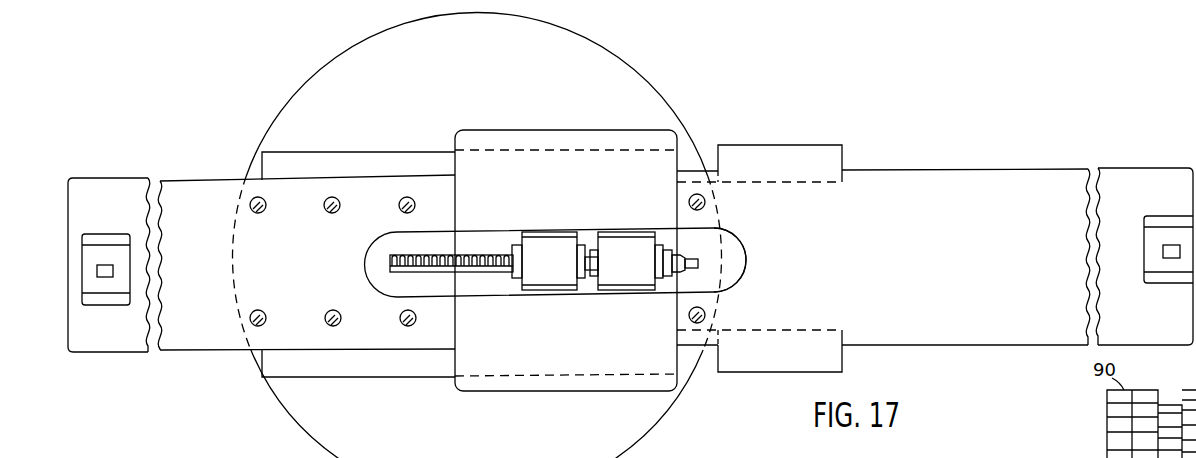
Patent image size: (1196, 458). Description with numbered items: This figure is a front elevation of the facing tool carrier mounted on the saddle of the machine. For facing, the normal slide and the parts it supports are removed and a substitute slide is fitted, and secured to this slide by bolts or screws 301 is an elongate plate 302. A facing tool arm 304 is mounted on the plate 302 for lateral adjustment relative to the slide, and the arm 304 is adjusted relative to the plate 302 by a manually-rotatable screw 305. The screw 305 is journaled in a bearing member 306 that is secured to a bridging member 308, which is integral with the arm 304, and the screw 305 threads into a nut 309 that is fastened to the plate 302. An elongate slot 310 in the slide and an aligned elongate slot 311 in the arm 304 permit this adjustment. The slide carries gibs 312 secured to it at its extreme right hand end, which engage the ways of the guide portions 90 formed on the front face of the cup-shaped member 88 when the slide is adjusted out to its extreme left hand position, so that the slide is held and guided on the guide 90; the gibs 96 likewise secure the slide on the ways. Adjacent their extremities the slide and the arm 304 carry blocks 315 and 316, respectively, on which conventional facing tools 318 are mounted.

The cup-shaped member 88 is at (1171, 406).
The portions 90 is at (640, 73).
The gibs 96 is at (366, 152).
The screws 301 is at (328, 315).
The elongate plate 302 is at (205, 350).
The facing tool arm 304 is at (961, 174).
The manually-rotatable screw 305 is at (487, 273).
The bearing member 306 is at (628, 240).
The bridging member 308 is at (633, 131).
The nut 309 is at (551, 240).
The elongate slot 310 is at (378, 243).
The elongate slot 311 is at (742, 250).
The gibs 312 is at (782, 145).
The block 315 is at (107, 250).
The block 316 is at (1163, 232).
The facing tools 318 is at (105, 278).